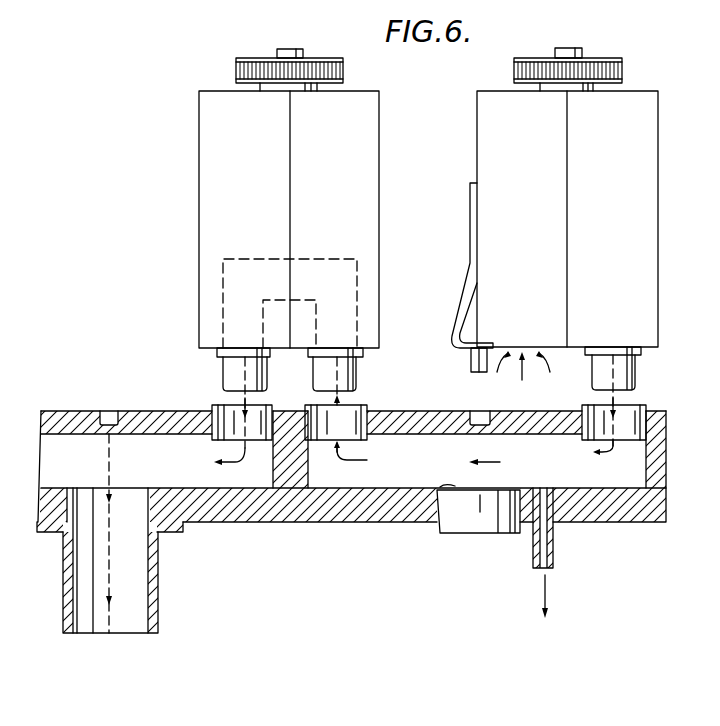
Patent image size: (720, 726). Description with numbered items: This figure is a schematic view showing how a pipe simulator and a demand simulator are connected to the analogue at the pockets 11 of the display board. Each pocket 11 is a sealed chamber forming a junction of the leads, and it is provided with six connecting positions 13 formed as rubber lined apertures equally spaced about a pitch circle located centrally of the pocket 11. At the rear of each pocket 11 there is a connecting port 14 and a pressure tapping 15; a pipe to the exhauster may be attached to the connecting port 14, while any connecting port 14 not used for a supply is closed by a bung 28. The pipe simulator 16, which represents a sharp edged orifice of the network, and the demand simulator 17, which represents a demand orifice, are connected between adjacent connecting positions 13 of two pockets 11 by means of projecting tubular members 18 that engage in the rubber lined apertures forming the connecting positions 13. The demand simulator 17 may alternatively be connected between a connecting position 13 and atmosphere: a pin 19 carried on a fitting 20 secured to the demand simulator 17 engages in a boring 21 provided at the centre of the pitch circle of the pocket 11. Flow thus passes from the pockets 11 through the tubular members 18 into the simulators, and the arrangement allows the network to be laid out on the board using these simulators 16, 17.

The pocket 11 is at (68, 452).
The connecting position 13 is at (237, 420).
The connecting port 14 is at (130, 510).
The pressure tapping 15 is at (553, 560).
The pipe simulator 16 is at (217, 172).
The demand simulator 17 is at (630, 115).
The projecting tubular member 18 is at (225, 368).
The pin 19 is at (470, 363).
The fitting 20 is at (462, 300).
The boring 21 is at (480, 412).
The bung 28 is at (447, 535).